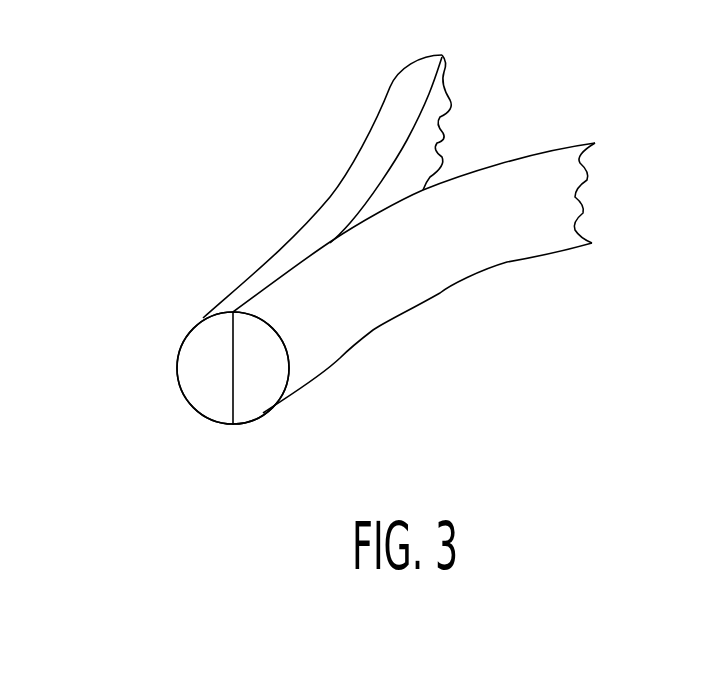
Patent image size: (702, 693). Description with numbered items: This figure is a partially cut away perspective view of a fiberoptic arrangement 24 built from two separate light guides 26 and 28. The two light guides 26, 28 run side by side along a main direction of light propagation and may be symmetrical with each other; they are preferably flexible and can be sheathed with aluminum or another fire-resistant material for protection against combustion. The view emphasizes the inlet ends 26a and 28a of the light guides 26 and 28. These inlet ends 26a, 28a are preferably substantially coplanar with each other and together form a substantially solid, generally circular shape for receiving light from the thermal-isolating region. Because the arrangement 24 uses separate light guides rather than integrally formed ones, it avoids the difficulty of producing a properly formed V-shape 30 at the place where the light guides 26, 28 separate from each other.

The arrangement 24 is at (273, 222).
The light guide 26 is at (250, 292).
The inlet end 26a is at (195, 383).
The light guide 28 is at (401, 280).
The inlet end 28a is at (260, 408).
The V-shape 30 is at (467, 143).